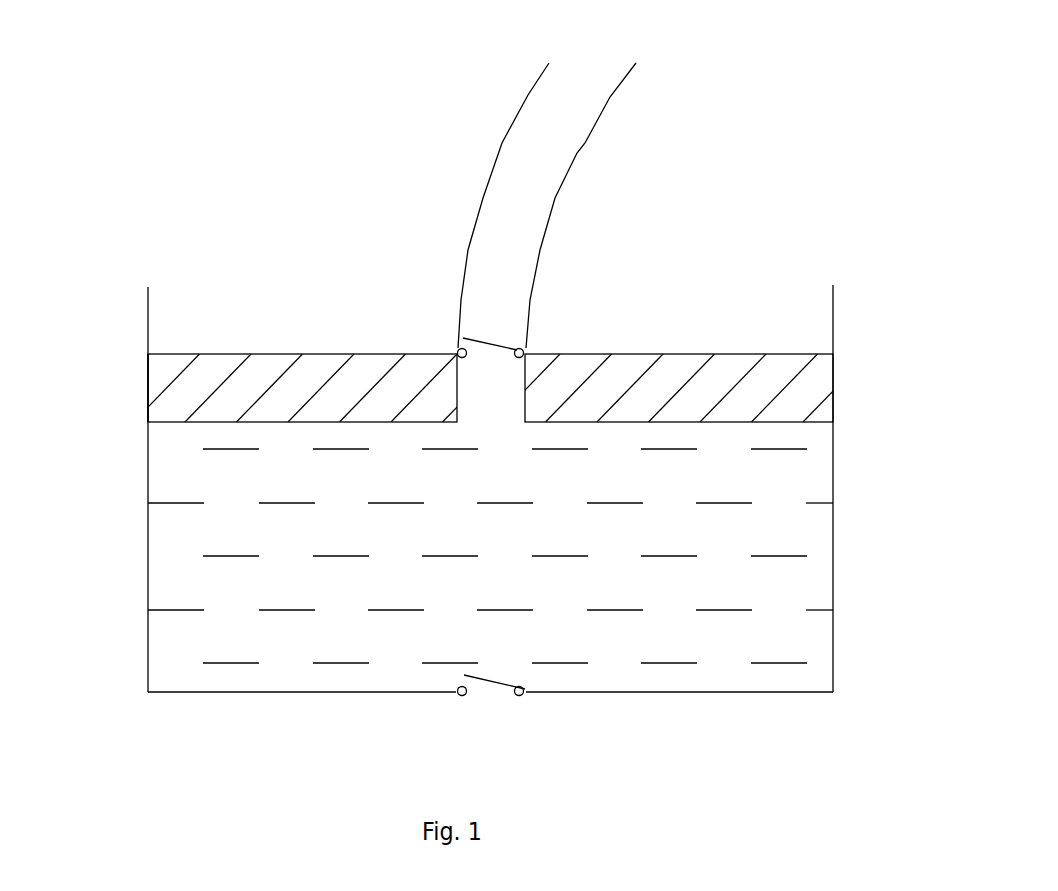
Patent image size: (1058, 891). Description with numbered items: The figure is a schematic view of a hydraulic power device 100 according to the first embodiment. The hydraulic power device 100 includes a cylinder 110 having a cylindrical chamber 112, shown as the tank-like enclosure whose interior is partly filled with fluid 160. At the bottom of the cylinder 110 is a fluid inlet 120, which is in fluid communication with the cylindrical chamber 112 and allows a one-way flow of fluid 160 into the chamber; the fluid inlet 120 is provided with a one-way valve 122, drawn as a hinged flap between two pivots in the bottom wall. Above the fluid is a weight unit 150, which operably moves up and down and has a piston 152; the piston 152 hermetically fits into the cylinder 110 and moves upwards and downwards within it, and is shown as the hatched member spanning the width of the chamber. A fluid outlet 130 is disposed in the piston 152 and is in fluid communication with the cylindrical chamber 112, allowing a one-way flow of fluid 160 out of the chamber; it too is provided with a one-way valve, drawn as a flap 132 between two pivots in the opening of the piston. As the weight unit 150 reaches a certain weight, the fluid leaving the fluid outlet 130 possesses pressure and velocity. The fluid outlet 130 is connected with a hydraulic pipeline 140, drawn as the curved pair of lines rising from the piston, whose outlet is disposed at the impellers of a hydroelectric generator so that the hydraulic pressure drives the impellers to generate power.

The hydraulic power device 100 is at (473, 44).
The cylinder 110 is at (138, 539).
The cylindrical chamber 112 is at (775, 528).
The fluid inlet 120 is at (503, 700).
The one-way valve 122 is at (487, 681).
The fluid outlet 130 is at (480, 328).
The top valve flap 132 is at (492, 342).
The hydraulic pipeline 140 is at (577, 153).
The weight unit 150 is at (275, 353).
The piston 152 is at (148, 388).
The fluid 160 is at (259, 610).